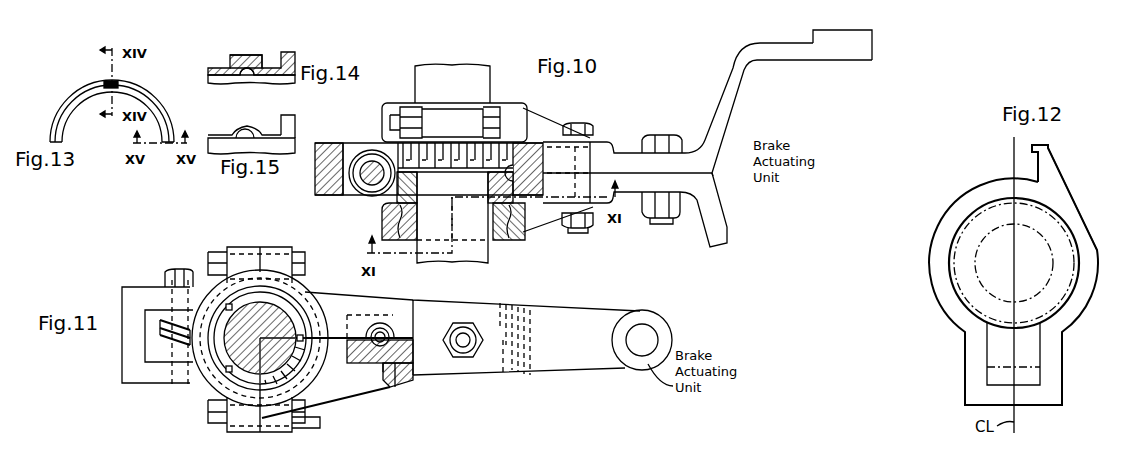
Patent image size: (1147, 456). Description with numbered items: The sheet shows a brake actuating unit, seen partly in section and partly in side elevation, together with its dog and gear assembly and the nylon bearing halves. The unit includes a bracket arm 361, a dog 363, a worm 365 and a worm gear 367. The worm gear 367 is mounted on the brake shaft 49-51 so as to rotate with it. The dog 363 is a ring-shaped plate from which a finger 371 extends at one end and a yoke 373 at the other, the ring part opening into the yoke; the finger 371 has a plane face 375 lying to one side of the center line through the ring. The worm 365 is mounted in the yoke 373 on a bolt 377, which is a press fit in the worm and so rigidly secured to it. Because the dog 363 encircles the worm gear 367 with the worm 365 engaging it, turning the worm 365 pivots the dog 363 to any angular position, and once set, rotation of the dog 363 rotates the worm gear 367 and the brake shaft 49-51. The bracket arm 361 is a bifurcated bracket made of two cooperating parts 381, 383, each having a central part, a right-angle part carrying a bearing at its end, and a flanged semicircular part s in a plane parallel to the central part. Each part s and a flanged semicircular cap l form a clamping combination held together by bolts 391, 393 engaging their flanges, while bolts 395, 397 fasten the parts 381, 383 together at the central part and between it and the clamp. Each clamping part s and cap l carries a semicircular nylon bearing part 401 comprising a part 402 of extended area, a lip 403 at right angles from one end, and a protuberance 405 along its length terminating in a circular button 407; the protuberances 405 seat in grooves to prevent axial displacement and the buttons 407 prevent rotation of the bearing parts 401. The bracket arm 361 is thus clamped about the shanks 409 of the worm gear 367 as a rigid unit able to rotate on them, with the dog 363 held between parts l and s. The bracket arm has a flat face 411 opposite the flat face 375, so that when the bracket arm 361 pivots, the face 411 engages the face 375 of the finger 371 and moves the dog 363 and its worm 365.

In FIG. 13, the semicircular bearing part 401 is at (121, 105).
In FIG. 10, the semicircular bearing part 401 is at (509, 243).
In FIG. 11, the semicircular bearing part 401 is at (297, 303).
In FIG. 13, the lip 403 is at (155, 98).
In FIG. 14, the lip 403 is at (287, 52).
In FIG. 15, the lip 403 is at (295, 113).
In FIG. 13, the protuberance 405 is at (76, 94).
In FIG. 15, the protuberance 405 is at (255, 123).
In FIG. 13, the circular button 407 is at (119, 85).
In FIG. 14, the circular button 407 is at (262, 55).
In FIG. 14, the part of extended area 402 is at (210, 68).
In FIG. 15, the part of extended area 402 is at (222, 138).
In FIG. 10, the brake shaft 49-51 is at (453, 68).
In FIG. 10, the bolt 391 is at (490, 107).
In FIG. 11, the bolt 391 is at (210, 258).
In FIG. 11, the bolt 393 is at (208, 411).
In FIG. 10, the worm gear 367 is at (513, 160).
In FIG. 11, the worm gear 367 is at (302, 373).
In FIG. 12, the worm gear 367 is at (1068, 281).
In FIG. 10, the shank 409 is at (475, 206).
In FIG. 10, the yoke 373 is at (318, 196).
In FIG. 11, the yoke 373 is at (127, 364).
In FIG. 12, the yoke 373 is at (1060, 383).
In FIG. 10, the bolt 377 is at (366, 193).
In FIG. 11, the bolt 377 is at (166, 272).
In FIG. 11, the worm 365 is at (168, 356).
In FIG. 12, the worm 365 is at (1036, 350).
In FIG. 10, the finger 371 is at (572, 160).
In FIG. 11, the finger 371 is at (368, 390).
In FIG. 12, the finger 371 is at (1057, 167).
In FIG. 11, the plane face 375 is at (352, 363).
In FIG. 12, the plane face 375 is at (1036, 145).
In FIG. 11, the flat face 411 is at (397, 379).
In FIG. 10, the bolt 397 is at (590, 124).
In FIG. 11, the bolt 397 is at (394, 332).
In FIG. 10, the bolt 395 is at (665, 137).
In FIG. 11, the bolt 395 is at (455, 323).
In FIG. 10, the bracket arm 361 is at (750, 135).
In FIG. 11, the bracket arm 361 is at (545, 341).
In FIG. 11, the dog 363 is at (416, 344).
In FIG. 12, the dog 363 is at (1021, 275).
In FIG. 10, the bracket arm part 383 is at (784, 45).
In FIG. 10, the bracket arm part 381 is at (725, 229).
In FIG. 11, the bracket arm part 381 is at (548, 306).
In FIG. 10, the flanged semicircular cap l is at (385, 105).
In FIG. 10, the flanged semicircular part s is at (523, 108).